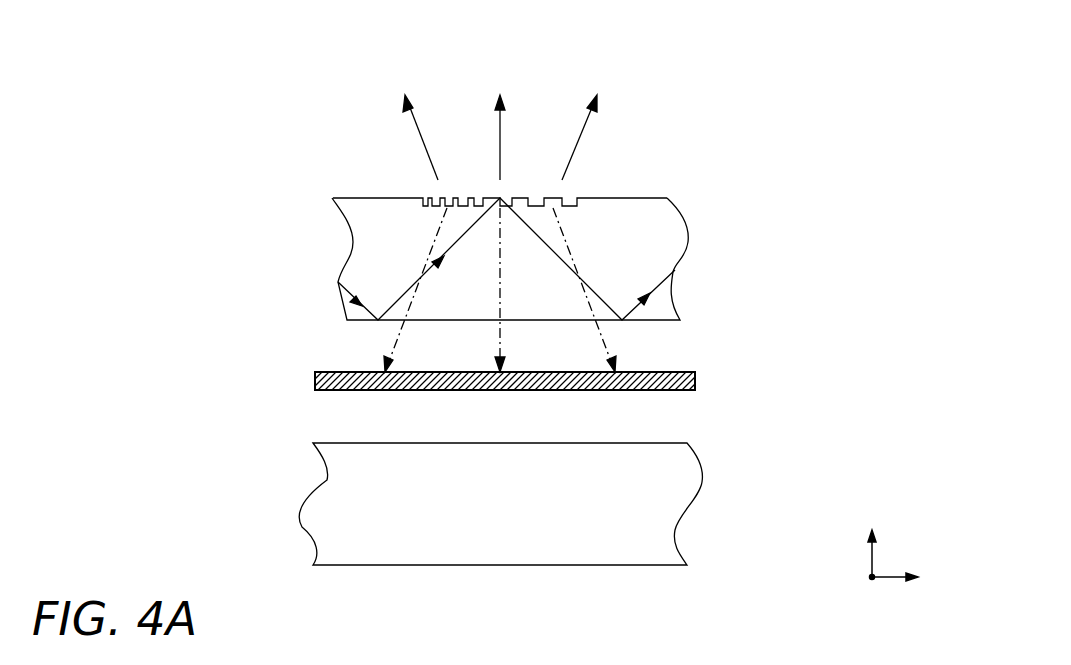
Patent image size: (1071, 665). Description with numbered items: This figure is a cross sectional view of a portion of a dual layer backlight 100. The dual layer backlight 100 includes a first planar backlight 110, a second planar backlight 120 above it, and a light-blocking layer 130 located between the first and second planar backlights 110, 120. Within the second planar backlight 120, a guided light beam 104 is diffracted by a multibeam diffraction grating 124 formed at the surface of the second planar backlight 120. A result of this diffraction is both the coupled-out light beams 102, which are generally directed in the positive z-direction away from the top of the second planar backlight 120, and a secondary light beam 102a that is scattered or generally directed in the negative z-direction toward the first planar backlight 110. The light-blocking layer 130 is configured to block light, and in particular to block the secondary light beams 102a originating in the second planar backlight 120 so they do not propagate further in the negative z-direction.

The dual layer backlight 100 is at (825, 78).
The coupled-out light beams 102 is at (615, 123).
The secondary light beam 102a is at (372, 343).
The guided light beam 104 is at (352, 302).
The first planar backlight 110 is at (708, 443).
The second planar backlight 120 is at (708, 198).
The multibeam diffraction grating 124 is at (426, 193).
The light-blocking layer 130 is at (695, 380).